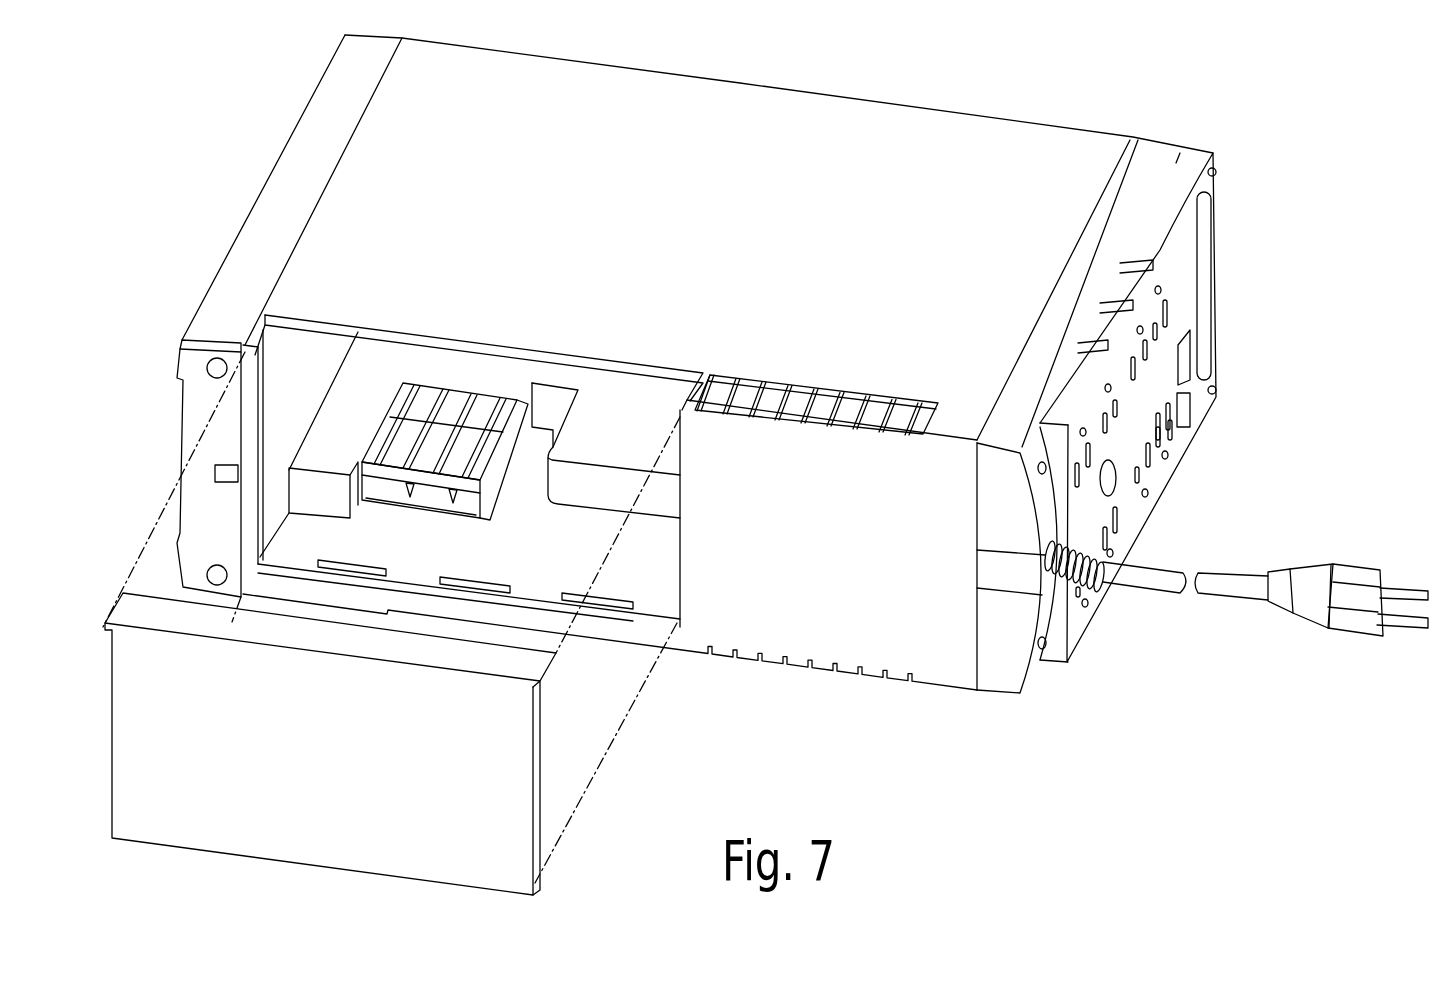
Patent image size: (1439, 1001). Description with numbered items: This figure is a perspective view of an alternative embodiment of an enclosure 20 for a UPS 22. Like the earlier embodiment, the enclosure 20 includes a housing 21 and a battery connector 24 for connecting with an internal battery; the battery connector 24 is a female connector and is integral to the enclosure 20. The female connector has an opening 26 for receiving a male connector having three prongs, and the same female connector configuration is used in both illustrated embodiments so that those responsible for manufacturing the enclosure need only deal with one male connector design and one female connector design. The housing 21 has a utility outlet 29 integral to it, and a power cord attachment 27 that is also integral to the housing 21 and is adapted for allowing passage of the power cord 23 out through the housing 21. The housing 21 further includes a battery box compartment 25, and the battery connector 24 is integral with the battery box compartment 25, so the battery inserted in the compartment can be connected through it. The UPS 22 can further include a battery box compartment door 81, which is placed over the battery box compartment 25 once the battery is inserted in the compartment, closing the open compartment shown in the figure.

The enclosure 20 is at (968, 112).
The housing 21 is at (897, 676).
The UPS 22 is at (793, 64).
The power cord 23 is at (1356, 567).
The battery connector 24 is at (375, 505).
The battery box compartment 25 is at (650, 620).
The opening 26 is at (442, 500).
The power cord attachment 27 is at (1024, 597).
The utility outlet 29 is at (1165, 459).
The battery box compartment door 81 is at (327, 769).